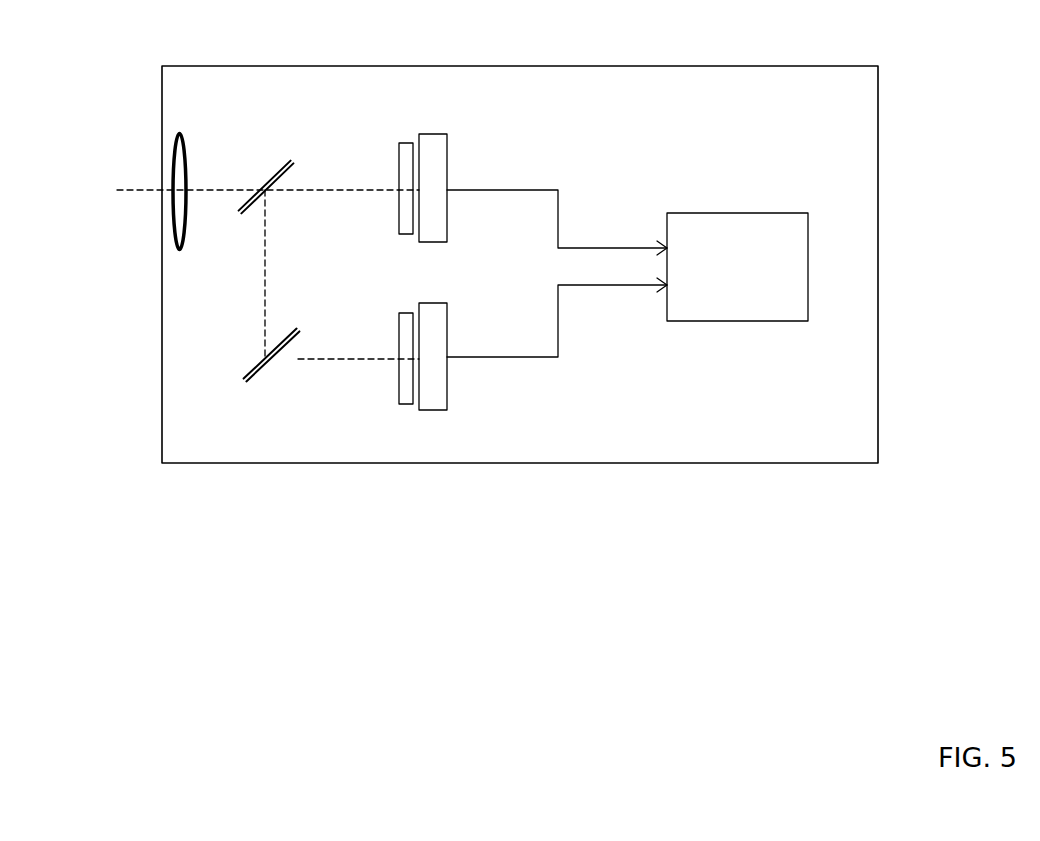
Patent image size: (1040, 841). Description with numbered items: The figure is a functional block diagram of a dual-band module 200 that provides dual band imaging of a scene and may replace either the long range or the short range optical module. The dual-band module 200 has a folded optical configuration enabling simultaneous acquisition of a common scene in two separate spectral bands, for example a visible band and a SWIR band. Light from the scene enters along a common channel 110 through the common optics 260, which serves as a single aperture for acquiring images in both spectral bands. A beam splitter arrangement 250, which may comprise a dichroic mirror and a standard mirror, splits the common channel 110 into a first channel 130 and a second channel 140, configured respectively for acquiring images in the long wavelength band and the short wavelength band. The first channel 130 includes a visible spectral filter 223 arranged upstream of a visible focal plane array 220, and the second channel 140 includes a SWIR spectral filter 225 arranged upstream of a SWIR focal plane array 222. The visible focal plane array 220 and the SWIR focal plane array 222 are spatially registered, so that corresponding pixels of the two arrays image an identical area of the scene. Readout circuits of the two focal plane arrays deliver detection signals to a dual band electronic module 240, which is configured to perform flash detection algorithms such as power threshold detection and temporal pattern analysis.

The common channel 110 is at (230, 172).
The first channel 130 is at (305, 368).
The second channel 140 is at (347, 175).
The dual-band module 200 is at (785, 65).
The visible focal plane array 220 is at (429, 133).
The SWIR focal plane array 222 is at (437, 412).
The visible spectral filter 223 is at (405, 142).
The SWIR spectral filter 225 is at (403, 407).
The dual band electronic module 240 is at (708, 322).
The beam splitter arrangement 250 is at (240, 213).
The common optics 260 is at (168, 170).